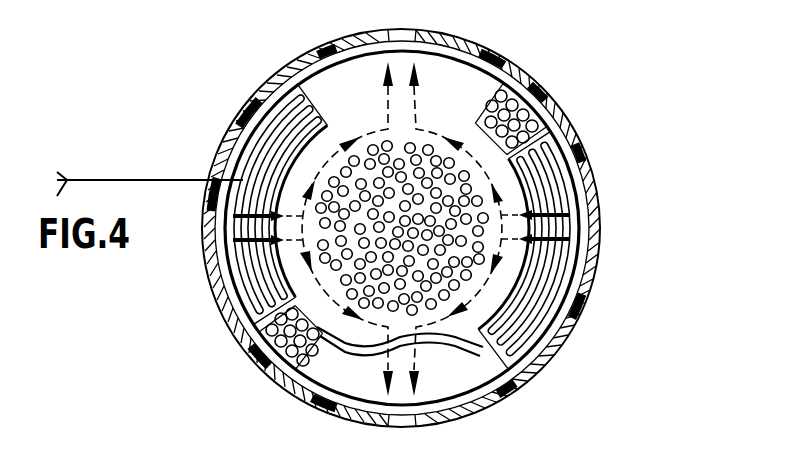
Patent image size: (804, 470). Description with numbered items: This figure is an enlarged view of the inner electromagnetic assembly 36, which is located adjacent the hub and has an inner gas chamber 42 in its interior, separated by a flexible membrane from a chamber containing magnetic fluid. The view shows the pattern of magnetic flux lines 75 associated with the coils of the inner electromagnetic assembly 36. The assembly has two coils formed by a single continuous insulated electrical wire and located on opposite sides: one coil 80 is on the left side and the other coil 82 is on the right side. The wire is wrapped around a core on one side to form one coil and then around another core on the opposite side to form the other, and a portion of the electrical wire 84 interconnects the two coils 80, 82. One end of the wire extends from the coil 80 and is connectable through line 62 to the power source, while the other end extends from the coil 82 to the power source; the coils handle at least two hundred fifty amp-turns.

The magnetic flux lines 75 is at (487, 47).
The inner electromagnetic assembly 36 is at (513, 115).
The line 62 is at (152, 181).
The inner gas chamber 42 is at (493, 218).
The coil 82 is at (582, 280).
The coil 80 is at (244, 286).
The portion of the electrical wire 84 is at (450, 347).